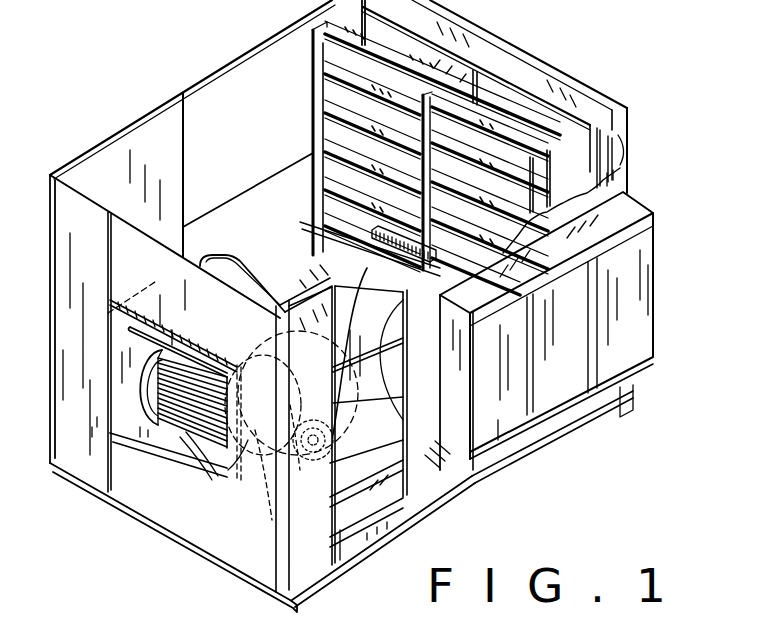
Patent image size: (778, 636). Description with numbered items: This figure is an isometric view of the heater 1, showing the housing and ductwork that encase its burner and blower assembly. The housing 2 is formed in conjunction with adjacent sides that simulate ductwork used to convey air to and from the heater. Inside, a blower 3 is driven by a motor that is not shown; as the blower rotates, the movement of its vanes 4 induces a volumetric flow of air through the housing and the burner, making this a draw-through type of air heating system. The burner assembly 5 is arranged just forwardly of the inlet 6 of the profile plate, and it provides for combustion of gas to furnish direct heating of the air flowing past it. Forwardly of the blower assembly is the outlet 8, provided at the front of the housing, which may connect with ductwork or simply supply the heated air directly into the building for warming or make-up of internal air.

The heater 1 is at (653, 166).
The housing 2 is at (221, 70).
The blower 3 is at (182, 438).
The vanes 4 is at (200, 447).
The burner assembly 5 is at (379, 236).
The inlet 6 is at (377, 267).
The outlet 8 is at (122, 415).